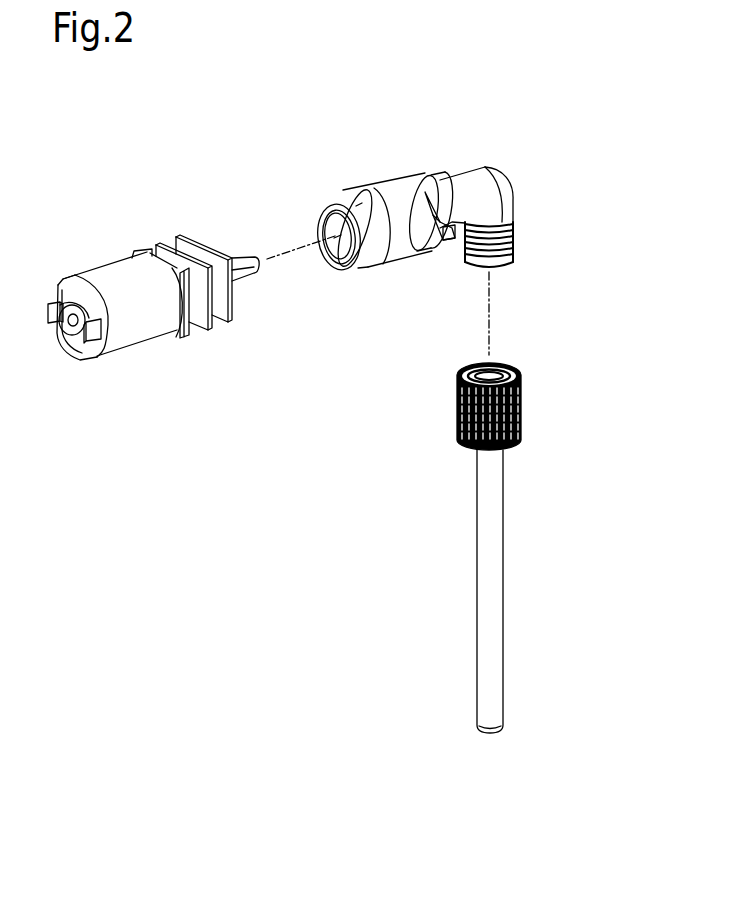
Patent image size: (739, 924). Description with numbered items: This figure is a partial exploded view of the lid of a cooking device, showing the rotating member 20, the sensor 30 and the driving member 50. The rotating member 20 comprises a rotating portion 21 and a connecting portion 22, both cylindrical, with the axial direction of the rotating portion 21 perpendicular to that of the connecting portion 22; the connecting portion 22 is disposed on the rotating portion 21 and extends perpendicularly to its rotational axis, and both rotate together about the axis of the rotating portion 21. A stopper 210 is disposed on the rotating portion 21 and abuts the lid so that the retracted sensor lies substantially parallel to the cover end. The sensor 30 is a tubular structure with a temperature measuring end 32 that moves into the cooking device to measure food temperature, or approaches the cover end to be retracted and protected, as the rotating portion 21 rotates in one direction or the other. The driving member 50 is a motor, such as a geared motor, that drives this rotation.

The rotating member 20 is at (450, 198).
The rotating portion 21 is at (391, 205).
The connecting portion 22 is at (503, 204).
The stopper 210 is at (440, 243).
The driving member 50 is at (130, 327).
The sensor 30 is at (525, 548).
The temperature measuring end 32 is at (486, 700).